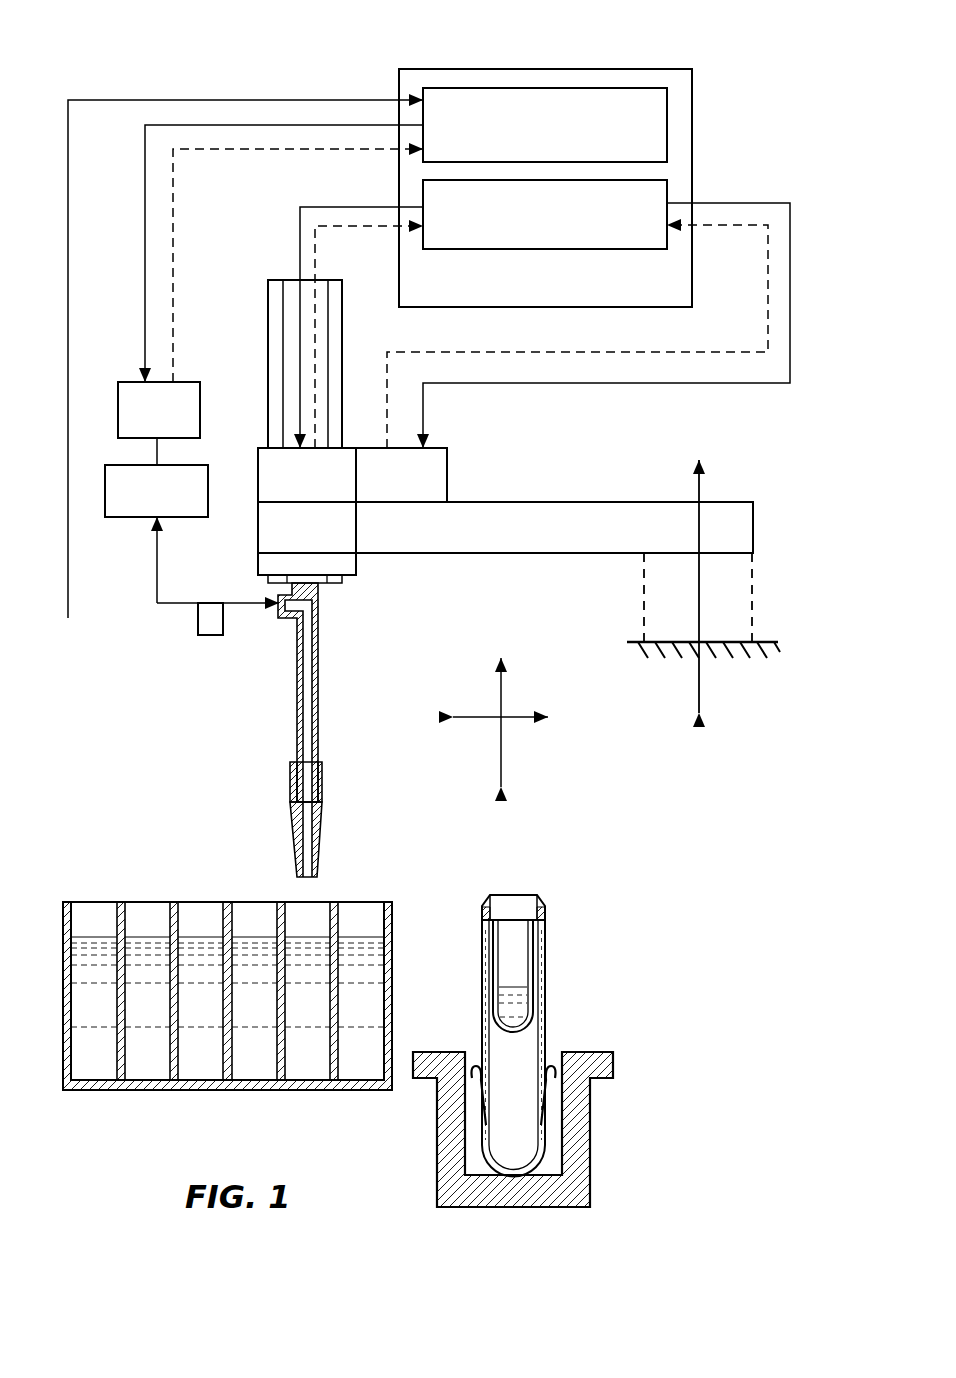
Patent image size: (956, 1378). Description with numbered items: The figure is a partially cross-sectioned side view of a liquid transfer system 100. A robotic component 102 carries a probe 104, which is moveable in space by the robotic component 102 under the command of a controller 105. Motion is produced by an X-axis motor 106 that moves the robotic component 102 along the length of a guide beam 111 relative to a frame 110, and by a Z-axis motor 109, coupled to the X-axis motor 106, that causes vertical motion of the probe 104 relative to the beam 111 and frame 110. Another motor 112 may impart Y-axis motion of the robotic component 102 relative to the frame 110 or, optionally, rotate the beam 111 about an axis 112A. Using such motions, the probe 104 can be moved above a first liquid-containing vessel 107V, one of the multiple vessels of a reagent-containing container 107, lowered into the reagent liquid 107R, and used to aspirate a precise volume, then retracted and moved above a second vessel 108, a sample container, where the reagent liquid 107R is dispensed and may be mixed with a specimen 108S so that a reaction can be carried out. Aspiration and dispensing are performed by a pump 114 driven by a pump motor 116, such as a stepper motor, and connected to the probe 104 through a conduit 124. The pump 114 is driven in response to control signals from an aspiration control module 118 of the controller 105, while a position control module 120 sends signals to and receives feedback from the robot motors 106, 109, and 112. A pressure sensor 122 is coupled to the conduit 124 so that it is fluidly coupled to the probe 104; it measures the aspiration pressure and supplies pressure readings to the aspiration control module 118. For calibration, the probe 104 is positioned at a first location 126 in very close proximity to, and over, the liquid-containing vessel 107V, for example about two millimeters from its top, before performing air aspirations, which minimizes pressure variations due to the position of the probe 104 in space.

The liquid transfer system 100 is at (192, 75).
The robotic component 102 is at (268, 298).
The probe 104 is at (297, 790).
The controller 105 is at (579, 166).
The X-axis motor 106 is at (432, 468).
The reagent-containing container 107 is at (234, 994).
The first liquid-containing vessel 107V is at (313, 905).
The reagent liquid 107R is at (310, 1025).
The second vessel 108 is at (532, 1037).
The specimen 108S is at (512, 1002).
The Z-axis motor 109 is at (268, 472).
The frame 110 is at (771, 640).
The guide beam 111 is at (545, 502).
The motor 112 is at (644, 590).
The axis 112A is at (703, 677).
The pump 114 is at (180, 517).
The pump motor 116 is at (118, 382).
The aspiration control module 118 is at (668, 128).
The position control module 120 is at (668, 190).
The pressure sensor 122 is at (223, 638).
The conduit 124 is at (157, 562).
The first location 126 is at (332, 868).